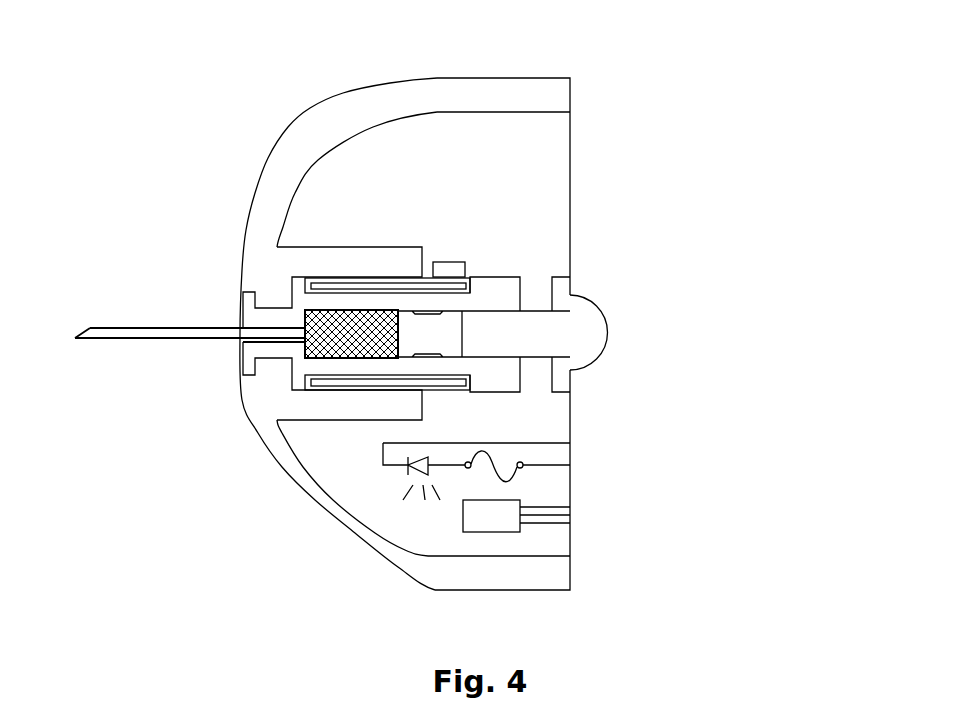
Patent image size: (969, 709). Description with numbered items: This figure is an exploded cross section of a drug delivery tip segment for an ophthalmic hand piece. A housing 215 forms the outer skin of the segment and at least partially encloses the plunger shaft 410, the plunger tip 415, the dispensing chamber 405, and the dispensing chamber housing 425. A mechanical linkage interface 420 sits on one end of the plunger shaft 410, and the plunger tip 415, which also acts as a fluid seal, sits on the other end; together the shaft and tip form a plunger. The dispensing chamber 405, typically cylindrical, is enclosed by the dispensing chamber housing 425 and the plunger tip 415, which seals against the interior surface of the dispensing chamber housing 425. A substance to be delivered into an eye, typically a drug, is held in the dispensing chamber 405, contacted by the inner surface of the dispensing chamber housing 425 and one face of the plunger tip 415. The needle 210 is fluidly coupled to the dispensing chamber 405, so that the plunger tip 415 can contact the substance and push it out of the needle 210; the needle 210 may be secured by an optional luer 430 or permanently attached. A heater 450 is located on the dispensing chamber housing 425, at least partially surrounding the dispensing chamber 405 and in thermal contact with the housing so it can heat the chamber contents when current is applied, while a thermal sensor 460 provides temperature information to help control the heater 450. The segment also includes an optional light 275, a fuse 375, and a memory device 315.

The housing 215 is at (507, 95).
The heater 450 is at (375, 279).
The thermal sensor 460 is at (468, 260).
The plunger tip 415 is at (432, 333).
The plunger shaft 410 is at (510, 335).
The mechanical linkage interface 420 is at (608, 333).
The dispensing chamber 405 is at (352, 332).
The luer 430 is at (240, 308).
The dispensing chamber housing 425 is at (298, 365).
The needle 210 is at (165, 339).
The light 275 is at (435, 452).
The fuse 375 is at (518, 477).
The memory device 315 is at (516, 516).